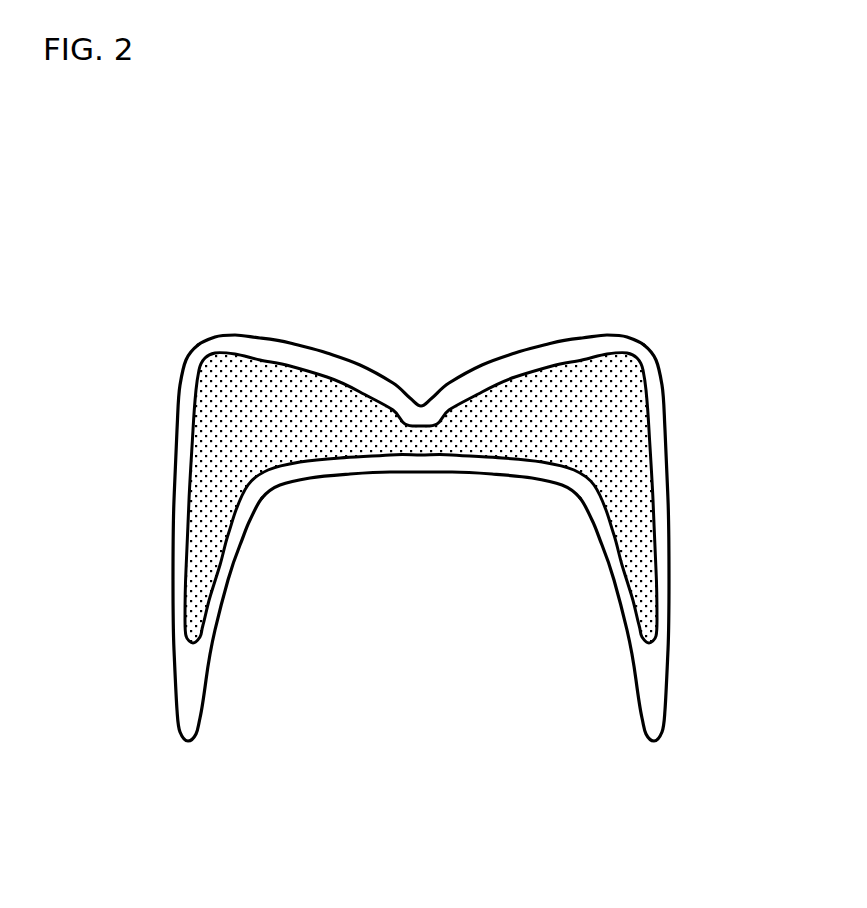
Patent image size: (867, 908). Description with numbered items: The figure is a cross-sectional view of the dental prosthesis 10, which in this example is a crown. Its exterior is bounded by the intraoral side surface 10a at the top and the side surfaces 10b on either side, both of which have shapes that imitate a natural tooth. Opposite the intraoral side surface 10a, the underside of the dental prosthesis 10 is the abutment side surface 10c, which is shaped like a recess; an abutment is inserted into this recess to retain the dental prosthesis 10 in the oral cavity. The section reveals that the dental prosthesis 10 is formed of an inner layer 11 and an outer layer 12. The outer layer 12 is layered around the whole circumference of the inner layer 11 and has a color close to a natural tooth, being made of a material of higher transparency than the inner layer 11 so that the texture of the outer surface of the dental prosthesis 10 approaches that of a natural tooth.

The dental prosthesis 10 is at (105, 300).
The intraoral side surface 10a is at (332, 355).
The side surface 10b is at (170, 536).
The abutment side surface 10c is at (408, 710).
The inner layer 11 is at (217, 438).
The outer layer 12 is at (178, 483).